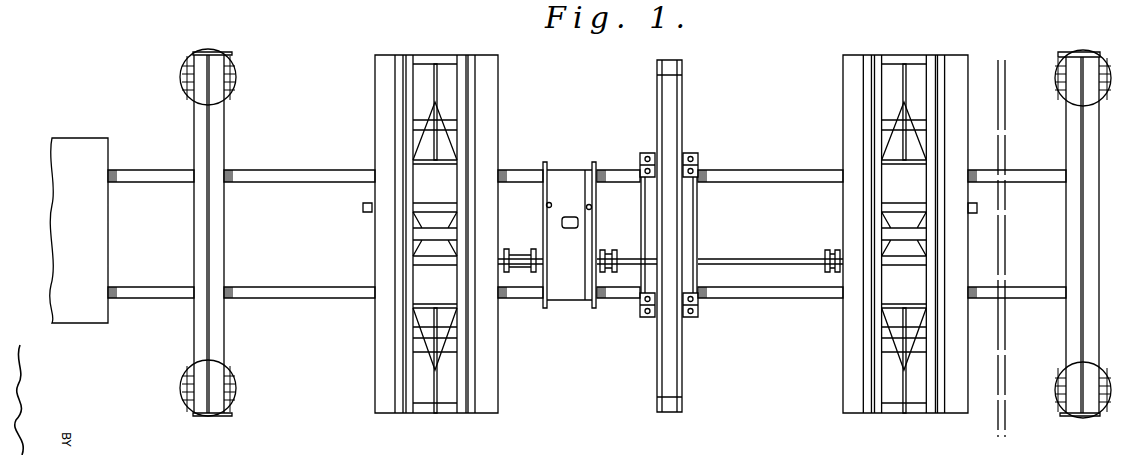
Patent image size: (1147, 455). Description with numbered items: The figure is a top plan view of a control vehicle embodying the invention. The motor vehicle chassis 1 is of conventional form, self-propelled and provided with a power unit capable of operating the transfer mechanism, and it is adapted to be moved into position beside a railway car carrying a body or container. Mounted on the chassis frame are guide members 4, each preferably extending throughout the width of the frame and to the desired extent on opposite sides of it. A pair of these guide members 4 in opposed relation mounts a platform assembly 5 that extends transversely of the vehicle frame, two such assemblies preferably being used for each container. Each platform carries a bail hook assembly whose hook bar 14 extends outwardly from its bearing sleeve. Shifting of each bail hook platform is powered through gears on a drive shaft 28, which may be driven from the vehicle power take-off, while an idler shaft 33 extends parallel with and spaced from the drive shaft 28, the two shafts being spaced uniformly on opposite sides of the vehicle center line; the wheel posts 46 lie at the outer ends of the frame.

The motor vehicle chassis 1 is at (312, 290).
The guide members 4 is at (378, 348).
The platform assembly 5 is at (430, 275).
The hook bar 14 is at (437, 408).
The drive shaft 28 is at (783, 262).
The idler shaft 33 is at (363, 208).
The wheel post 46 is at (197, 250).